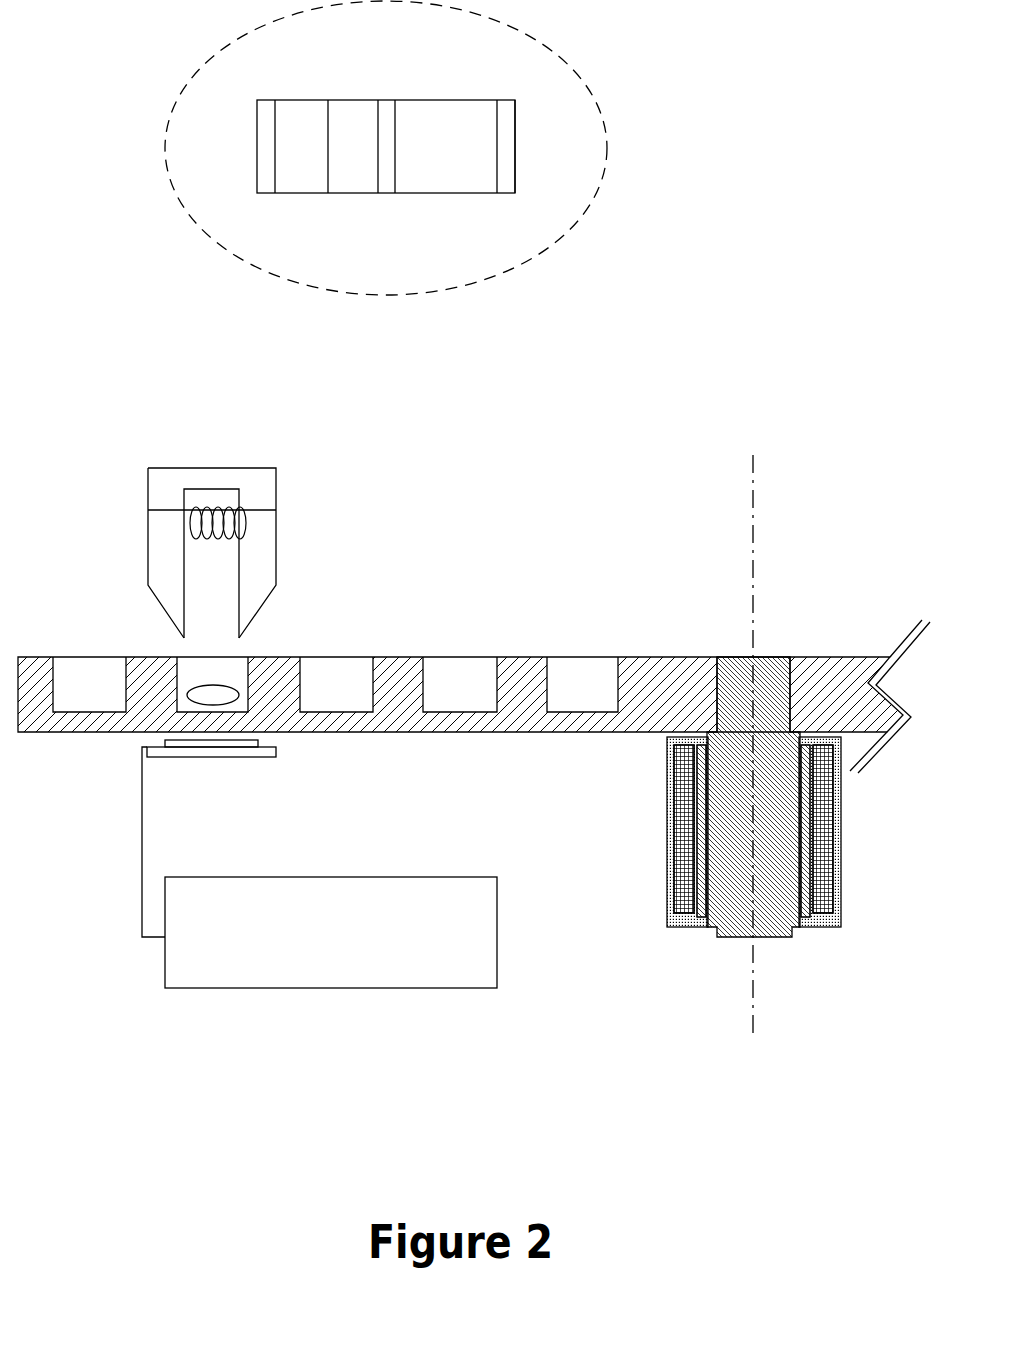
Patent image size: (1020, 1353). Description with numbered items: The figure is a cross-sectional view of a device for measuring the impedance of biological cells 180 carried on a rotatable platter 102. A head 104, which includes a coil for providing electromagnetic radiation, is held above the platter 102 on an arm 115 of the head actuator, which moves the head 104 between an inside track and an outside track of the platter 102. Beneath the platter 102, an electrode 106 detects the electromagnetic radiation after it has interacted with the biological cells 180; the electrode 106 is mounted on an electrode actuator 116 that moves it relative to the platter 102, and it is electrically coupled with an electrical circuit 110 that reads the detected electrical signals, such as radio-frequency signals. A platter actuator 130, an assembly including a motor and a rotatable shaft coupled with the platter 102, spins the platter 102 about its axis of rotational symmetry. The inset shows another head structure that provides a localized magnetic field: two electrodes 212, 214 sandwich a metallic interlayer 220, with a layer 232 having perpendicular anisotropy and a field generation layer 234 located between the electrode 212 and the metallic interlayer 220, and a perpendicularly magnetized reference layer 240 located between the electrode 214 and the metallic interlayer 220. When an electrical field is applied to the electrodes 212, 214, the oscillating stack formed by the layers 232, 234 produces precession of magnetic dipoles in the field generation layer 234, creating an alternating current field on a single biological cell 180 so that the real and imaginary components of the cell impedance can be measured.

The platter 102 is at (460, 657).
The head 104 is at (278, 538).
The electrode 106 is at (258, 742).
The electrical circuit 110 is at (362, 948).
The arm 115 is at (203, 468).
The electrode actuator 116 is at (200, 757).
The platter actuator 130 is at (667, 898).
The biological cells 180 is at (230, 690).
The electrode 212 is at (268, 110).
The electrode 214 is at (507, 188).
The metallic interlayer 220 is at (387, 193).
The layer with perpendicular anisotropy 232 is at (298, 193).
The field generation layer 234 is at (348, 100).
The perpendicularly magnetized reference layer 240 is at (433, 100).